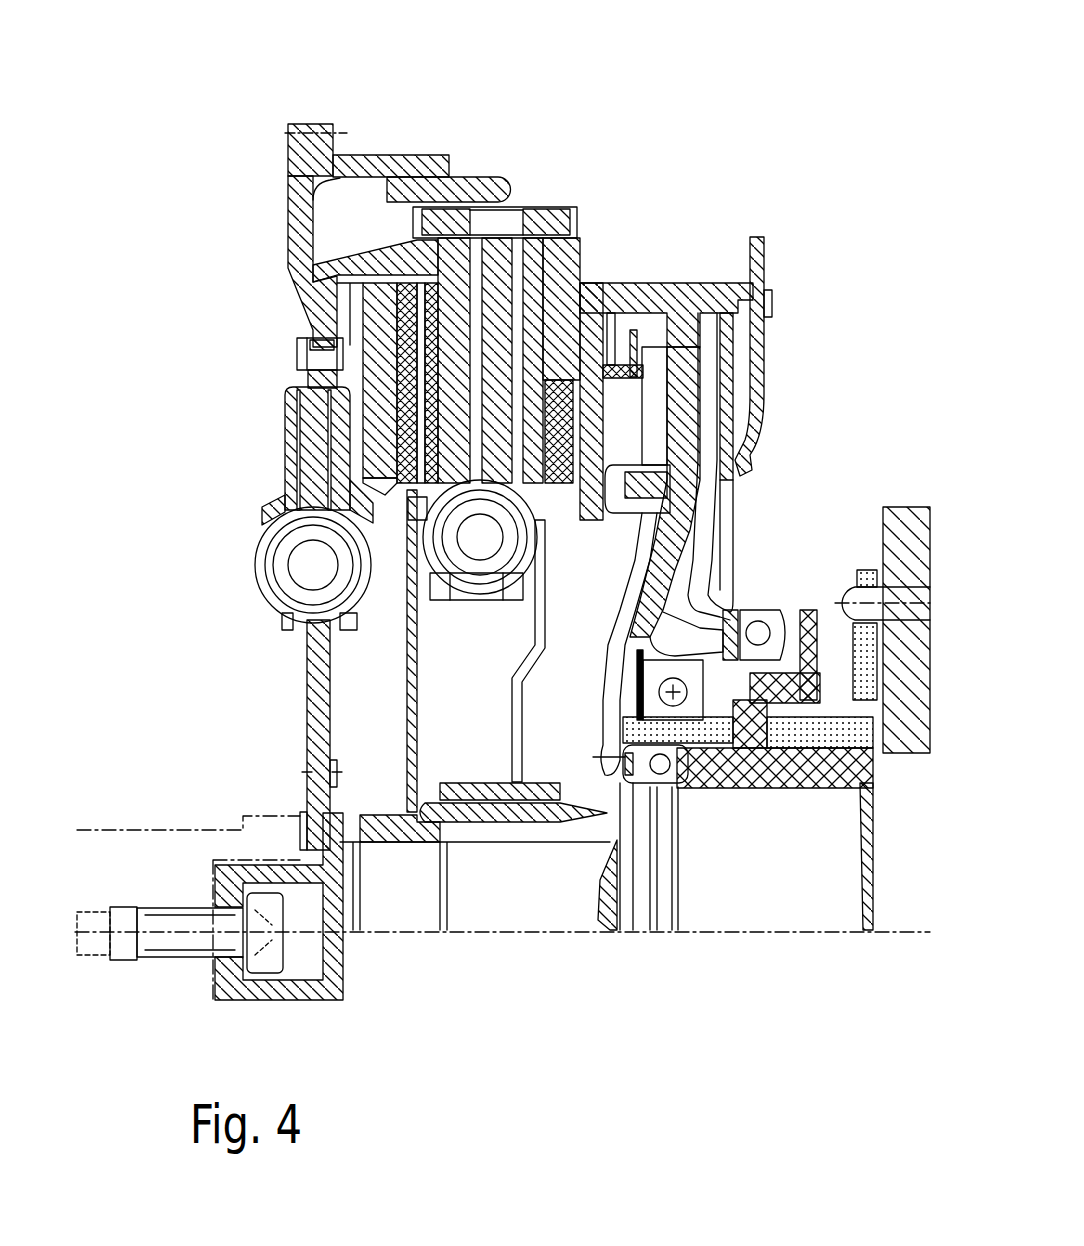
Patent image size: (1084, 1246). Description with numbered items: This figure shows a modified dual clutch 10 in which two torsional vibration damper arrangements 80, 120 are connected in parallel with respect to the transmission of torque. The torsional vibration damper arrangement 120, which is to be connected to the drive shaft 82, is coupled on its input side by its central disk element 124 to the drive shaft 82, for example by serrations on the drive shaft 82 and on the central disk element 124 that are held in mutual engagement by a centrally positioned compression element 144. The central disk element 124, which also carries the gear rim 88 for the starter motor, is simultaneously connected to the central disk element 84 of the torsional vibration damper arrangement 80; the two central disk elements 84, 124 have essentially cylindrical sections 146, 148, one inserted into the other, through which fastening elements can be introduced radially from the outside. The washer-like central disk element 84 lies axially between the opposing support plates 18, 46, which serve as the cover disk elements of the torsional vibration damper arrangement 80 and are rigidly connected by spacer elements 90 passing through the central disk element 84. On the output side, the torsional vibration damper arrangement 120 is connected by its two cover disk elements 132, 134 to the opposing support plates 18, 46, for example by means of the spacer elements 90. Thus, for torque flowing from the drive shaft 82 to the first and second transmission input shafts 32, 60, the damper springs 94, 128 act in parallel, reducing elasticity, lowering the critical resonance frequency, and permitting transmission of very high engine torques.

The dual clutch 10 is at (700, 98).
The opposing support plate 18 is at (456, 243).
The first transmission input shaft 32 is at (427, 912).
The opposing support plate 46 is at (527, 303).
The second transmission input shaft 60 is at (545, 805).
The torsional vibration damper arrangement 80 is at (568, 125).
The drive shaft 82 is at (113, 842).
The central disk element 84 is at (497, 283).
The gear rim 88 is at (300, 158).
The spacer elements 90 is at (503, 226).
The damper springs 94 is at (477, 580).
The torsional vibration damper arrangement 120 is at (334, 103).
The central disk element 124 is at (305, 678).
The damper springs 128 is at (267, 580).
The cover disk element 132 is at (287, 400).
The cover disk element 134 is at (313, 322).
The compression element 144 is at (260, 990).
The cylindrical section 146 is at (405, 190).
The cylindrical section 148 is at (368, 165).